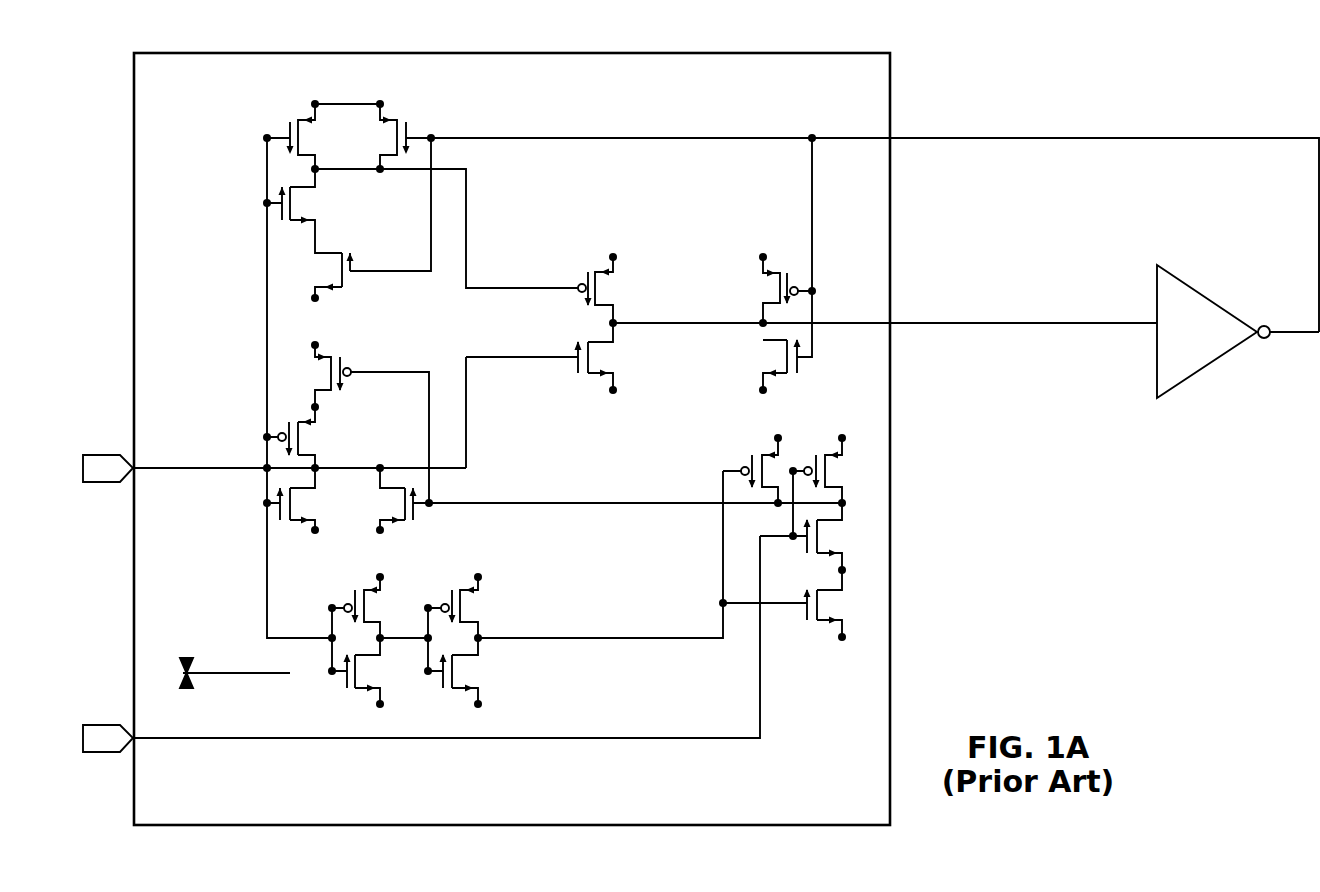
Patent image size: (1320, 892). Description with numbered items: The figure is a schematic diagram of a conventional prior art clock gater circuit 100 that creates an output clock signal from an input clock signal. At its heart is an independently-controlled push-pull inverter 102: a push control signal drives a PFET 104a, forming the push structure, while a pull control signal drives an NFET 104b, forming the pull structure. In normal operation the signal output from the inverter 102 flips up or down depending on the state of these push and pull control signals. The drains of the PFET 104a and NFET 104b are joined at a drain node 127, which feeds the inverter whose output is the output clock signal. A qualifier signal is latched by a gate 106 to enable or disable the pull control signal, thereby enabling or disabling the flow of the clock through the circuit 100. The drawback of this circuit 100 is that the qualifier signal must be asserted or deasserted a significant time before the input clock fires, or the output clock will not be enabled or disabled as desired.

The clock gater circuit 100 is at (701, 439).
The push-pull inverter 102 is at (609, 310).
The PFET 104a is at (594, 246).
The NFET 104b is at (588, 383).
The nck node 127 is at (615, 322).
The gate 106 is at (840, 532).